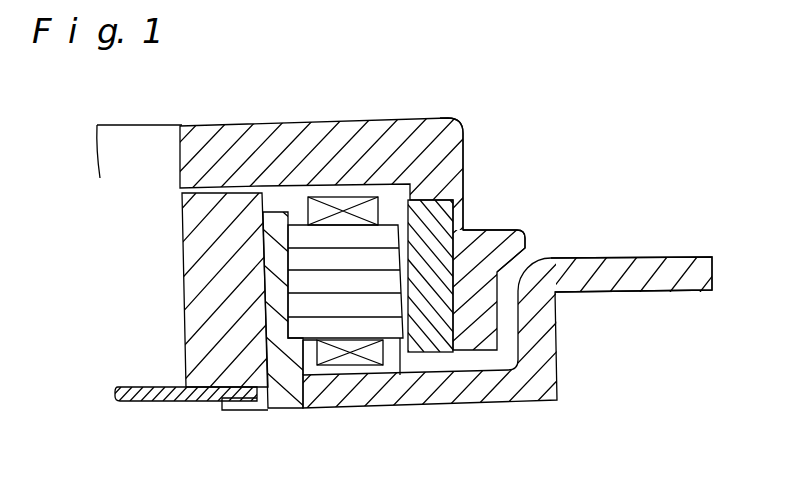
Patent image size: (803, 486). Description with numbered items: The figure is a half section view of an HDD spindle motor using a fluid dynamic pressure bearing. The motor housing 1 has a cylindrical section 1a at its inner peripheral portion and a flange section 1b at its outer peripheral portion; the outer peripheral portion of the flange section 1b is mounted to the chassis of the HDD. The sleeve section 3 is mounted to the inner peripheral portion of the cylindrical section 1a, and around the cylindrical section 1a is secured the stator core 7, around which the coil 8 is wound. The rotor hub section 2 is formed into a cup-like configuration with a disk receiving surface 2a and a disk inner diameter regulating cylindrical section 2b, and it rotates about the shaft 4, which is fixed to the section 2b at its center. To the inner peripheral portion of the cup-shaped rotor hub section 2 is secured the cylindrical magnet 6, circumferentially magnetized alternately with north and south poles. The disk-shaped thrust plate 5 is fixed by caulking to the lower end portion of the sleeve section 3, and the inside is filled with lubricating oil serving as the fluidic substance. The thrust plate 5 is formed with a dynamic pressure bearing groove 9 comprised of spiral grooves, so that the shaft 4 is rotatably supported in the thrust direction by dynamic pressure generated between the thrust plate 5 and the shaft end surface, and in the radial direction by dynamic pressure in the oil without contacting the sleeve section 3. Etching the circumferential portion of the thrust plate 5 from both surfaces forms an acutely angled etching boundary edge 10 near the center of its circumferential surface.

The motor housing 1 is at (408, 392).
The cylindrical section 1a is at (293, 408).
The flange section 1b is at (608, 263).
The rotor hub section 2 is at (382, 153).
The disk receiving surface 2a is at (505, 228).
The disk inner diameter regulating cylindrical section 2b is at (458, 155).
The sleeve section 3 is at (218, 215).
The shaft 4 is at (138, 145).
The thrust plate 5 is at (150, 402).
The magnet 6 is at (443, 340).
The stator core 7 is at (328, 307).
The coil 8 is at (357, 360).
The dynamic pressure bearing groove 9 is at (133, 383).
The etching boundary edge 10 is at (257, 397).